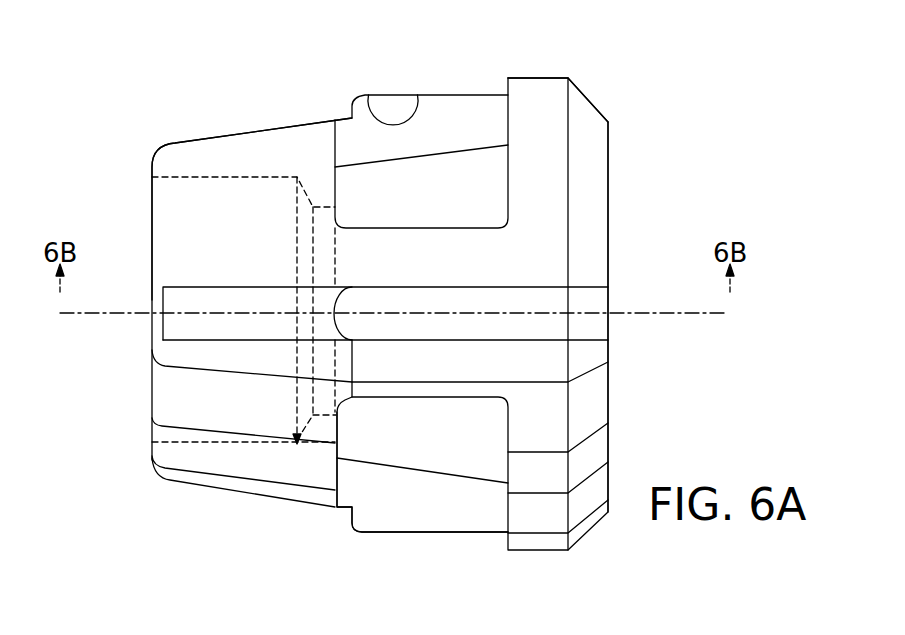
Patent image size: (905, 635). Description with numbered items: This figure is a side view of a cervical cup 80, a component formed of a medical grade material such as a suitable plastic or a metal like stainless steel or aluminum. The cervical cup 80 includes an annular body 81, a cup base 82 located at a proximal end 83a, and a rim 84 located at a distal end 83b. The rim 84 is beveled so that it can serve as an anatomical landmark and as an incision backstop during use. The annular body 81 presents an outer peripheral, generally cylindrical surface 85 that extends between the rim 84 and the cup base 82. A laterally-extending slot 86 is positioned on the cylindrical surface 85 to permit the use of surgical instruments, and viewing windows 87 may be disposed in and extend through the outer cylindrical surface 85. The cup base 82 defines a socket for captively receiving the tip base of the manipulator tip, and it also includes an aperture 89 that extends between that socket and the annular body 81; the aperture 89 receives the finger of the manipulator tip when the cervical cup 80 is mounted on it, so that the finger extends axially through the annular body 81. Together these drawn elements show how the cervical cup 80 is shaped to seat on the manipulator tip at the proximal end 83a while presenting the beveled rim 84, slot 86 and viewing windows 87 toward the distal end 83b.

The cervical cup 80 is at (122, 157).
The annular body 81 is at (392, 512).
The cup base 82 is at (185, 157).
The proximal end 83a is at (150, 423).
The distal end 83b is at (662, 152).
The rim 84 is at (600, 88).
The cylindrical surface 85 is at (365, 95).
The laterally-extending slot 86 is at (548, 297).
The viewing windows 87 is at (473, 173).
The aperture 89 is at (333, 270).